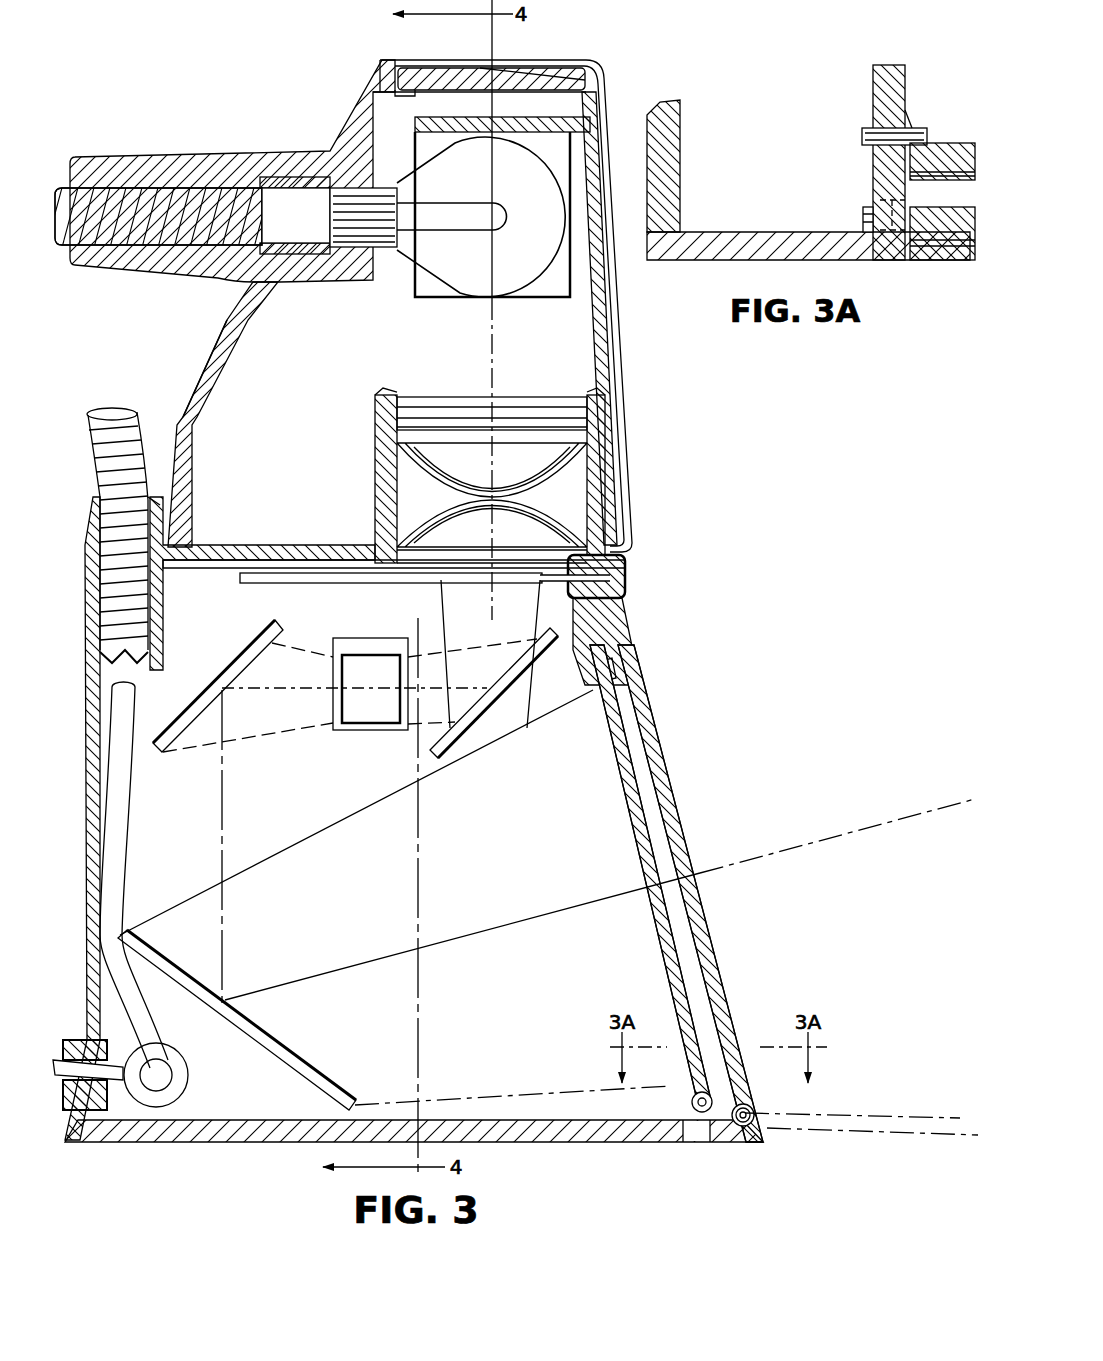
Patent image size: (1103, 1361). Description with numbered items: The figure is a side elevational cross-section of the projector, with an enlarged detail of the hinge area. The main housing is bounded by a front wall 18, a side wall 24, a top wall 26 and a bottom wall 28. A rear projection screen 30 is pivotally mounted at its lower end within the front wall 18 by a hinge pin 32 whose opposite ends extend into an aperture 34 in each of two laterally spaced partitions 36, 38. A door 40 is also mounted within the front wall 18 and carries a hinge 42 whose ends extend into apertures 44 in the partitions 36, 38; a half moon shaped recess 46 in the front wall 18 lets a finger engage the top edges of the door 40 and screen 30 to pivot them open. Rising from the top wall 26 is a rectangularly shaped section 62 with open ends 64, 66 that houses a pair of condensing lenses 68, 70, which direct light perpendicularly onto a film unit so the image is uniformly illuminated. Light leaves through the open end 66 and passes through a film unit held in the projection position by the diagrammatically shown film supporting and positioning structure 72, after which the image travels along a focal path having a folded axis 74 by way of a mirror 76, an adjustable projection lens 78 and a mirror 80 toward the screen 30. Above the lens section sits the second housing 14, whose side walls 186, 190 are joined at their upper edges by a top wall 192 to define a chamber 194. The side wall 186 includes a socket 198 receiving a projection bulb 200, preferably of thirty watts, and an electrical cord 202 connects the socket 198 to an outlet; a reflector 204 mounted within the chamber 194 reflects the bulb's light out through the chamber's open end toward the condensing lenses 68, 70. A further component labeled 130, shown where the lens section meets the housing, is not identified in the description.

In FIG. 3, the second housing 14 is at (337, 102).
In FIG. 3, the front wall 18 is at (625, 603).
In FIG. 3A, the front wall 18 is at (735, 260).
In FIG. 3A, the side wall 24 is at (650, 135).
In FIG. 3, the top wall 26 is at (290, 543).
In FIG. 3, the bottom wall 28 is at (260, 1142).
In FIG. 3, the rear projection screen 30 is at (618, 800).
In FIG. 3A, the rear projection screen 30 is at (956, 150).
In FIG. 3, the hinge pin 32 is at (696, 1096).
In FIG. 3A, the hinge pin 32 is at (908, 128).
In FIG. 3A, the aperture 34 is at (866, 146).
In FIG. 3, the partition 36 is at (348, 847).
In FIG. 3A, the partition 38 is at (873, 100).
In FIG. 3, the door 40 is at (680, 805).
In FIG. 3A, the door 40 is at (952, 258).
In FIG. 3, the hinge 42 is at (753, 1108).
In FIG. 3A, the hinge 42 is at (863, 218).
In FIG. 3A, the apertures 44 is at (876, 195).
In FIG. 3, the half moon shaped recess 46 is at (620, 668).
In FIG. 3, the rectangularly shaped section 62 is at (375, 440).
In FIG. 3, the open end 64 is at (410, 395).
In FIG. 3, the open end 66 is at (415, 583).
In FIG. 3, the condensing lens 68 is at (560, 470).
In FIG. 3, the condensing lens 70 is at (560, 530).
In FIG. 3, the film supporting and positioning structure 72 is at (318, 592).
In FIG. 3, the folded axis 74 is at (492, 370).
In FIG. 3, the mirror 76 is at (505, 668).
In FIG. 3, the adjustable projection lens 78 is at (365, 640).
In FIG. 3, the mirror 80 is at (262, 668).
In FIG. 3, the gasket 130 is at (628, 565).
In FIG. 3, the side wall 186 is at (197, 382).
In FIG. 3, the side wall 190 is at (625, 368).
In FIG. 3, the top wall 192 is at (470, 68).
In FIG. 3, the chamber 194 is at (283, 330).
In FIG. 3, the socket 198 is at (335, 262).
In FIG. 3, the projection bulb 200 is at (467, 288).
In FIG. 3, the electrical cord 202 is at (190, 1060).
In FIG. 3, the reflector 204 is at (606, 284).